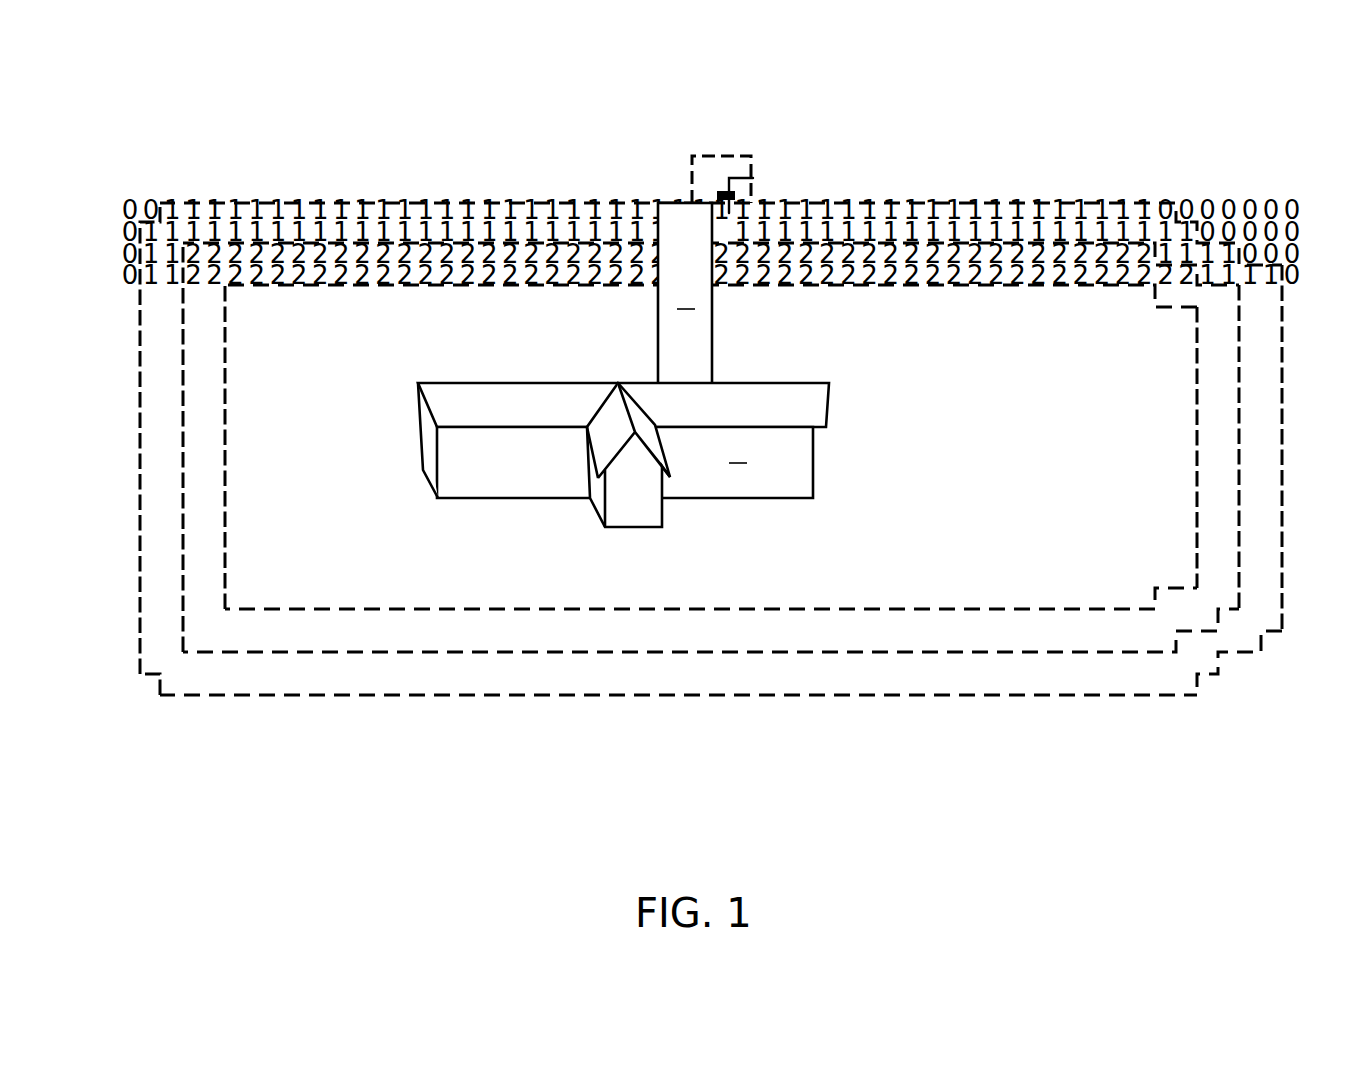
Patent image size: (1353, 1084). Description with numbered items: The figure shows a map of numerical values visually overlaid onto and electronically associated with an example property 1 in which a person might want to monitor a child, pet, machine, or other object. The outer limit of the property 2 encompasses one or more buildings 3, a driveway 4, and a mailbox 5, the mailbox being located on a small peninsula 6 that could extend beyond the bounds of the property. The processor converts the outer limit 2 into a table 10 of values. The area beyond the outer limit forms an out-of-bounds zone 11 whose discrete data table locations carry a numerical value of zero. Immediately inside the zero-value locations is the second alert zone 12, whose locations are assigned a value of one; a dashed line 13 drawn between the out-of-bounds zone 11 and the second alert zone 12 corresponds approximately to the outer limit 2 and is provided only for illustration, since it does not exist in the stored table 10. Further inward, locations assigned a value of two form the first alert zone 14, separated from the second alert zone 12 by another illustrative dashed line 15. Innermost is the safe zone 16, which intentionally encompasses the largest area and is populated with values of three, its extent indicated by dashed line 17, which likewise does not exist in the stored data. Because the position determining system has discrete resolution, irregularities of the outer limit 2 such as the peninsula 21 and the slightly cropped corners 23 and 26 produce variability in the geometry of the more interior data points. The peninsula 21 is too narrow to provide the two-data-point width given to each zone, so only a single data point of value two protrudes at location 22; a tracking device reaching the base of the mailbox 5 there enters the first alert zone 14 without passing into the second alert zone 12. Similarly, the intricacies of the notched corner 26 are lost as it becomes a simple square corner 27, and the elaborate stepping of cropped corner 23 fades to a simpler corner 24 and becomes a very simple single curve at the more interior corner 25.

The property 1 is at (1102, 128).
The outer limit of the property 2 is at (1282, 352).
The building 3 is at (623, 455).
The driveway 4 is at (685, 294).
The mailbox 5 is at (753, 178).
The peninsula 6 is at (733, 172).
The table of values 10 is at (995, 776).
The out-of-bounds zone 11 is at (1155, 750).
The second alert zone 12 is at (1197, 660).
The dashed line 13 is at (902, 697).
The first alert zone 14 is at (733, 632).
The dashed line 15 is at (639, 652).
The safe zone 16 is at (475, 588).
The dashed line 17 is at (818, 610).
The peninsula 21 is at (712, 168).
The single data point of numerical value two 22 is at (733, 233).
The cropped corner 23 is at (1197, 225).
The simpler corner 24 is at (1197, 275).
The more interior corner 25 is at (1163, 308).
The notched corner 26 is at (150, 218).
The simple square corner 27 is at (188, 243).